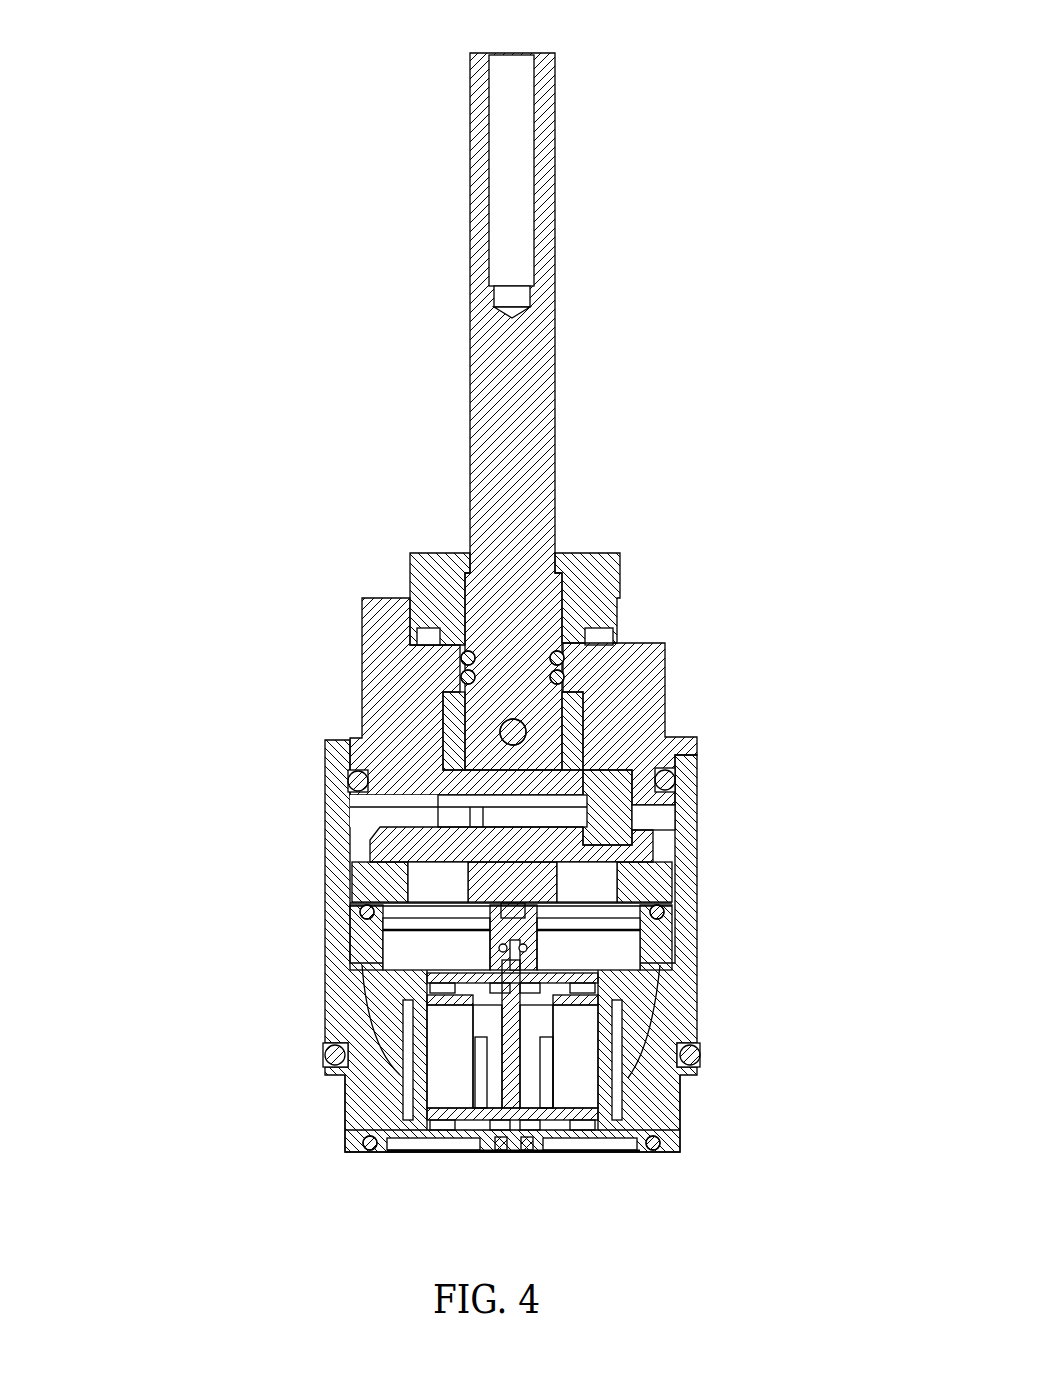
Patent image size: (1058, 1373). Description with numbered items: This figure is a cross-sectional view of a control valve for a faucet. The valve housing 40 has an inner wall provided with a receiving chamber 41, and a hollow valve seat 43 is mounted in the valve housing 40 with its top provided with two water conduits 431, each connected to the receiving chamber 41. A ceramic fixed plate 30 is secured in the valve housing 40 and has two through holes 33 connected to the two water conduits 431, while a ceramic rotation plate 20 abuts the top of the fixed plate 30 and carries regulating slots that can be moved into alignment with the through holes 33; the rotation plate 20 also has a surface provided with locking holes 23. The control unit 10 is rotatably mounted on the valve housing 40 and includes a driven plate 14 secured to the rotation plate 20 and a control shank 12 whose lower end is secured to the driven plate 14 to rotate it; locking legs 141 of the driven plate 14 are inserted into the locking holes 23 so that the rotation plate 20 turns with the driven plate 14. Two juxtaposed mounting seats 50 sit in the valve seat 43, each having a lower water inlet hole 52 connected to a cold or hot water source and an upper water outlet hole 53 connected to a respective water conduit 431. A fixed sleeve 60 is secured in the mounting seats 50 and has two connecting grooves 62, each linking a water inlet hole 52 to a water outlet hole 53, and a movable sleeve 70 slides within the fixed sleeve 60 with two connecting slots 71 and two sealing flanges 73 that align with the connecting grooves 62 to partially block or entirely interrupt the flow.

The control unit 10 is at (450, 180).
The control shank 12 is at (527, 395).
The driven plate 14 is at (400, 812).
The locking legs 141 is at (677, 786).
The rotation plate 20 is at (385, 835).
The locking holes 23 is at (643, 838).
The fixed plate 30 is at (360, 868).
The through holes 33 is at (415, 878).
The valve housing 40 is at (337, 1107).
The receiving chamber 41 is at (660, 823).
The valve seat 43 is at (400, 960).
The water conduits 431 is at (360, 912).
The mounting seats 50 is at (700, 1055).
The water inlet hole 52 is at (627, 1152).
The water outlet hole 53 is at (613, 950).
The fixed sleeve 60 is at (415, 984).
The connecting grooves 62 is at (443, 1152).
The movable sleeve 70 is at (325, 1053).
The connecting slots 71 is at (487, 1152).
The sealing flanges 73 is at (400, 1152).